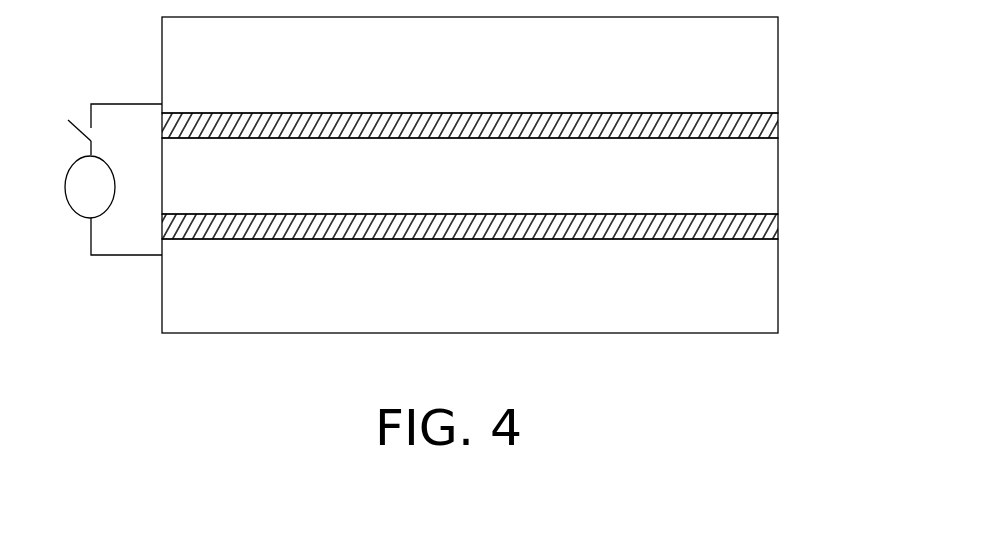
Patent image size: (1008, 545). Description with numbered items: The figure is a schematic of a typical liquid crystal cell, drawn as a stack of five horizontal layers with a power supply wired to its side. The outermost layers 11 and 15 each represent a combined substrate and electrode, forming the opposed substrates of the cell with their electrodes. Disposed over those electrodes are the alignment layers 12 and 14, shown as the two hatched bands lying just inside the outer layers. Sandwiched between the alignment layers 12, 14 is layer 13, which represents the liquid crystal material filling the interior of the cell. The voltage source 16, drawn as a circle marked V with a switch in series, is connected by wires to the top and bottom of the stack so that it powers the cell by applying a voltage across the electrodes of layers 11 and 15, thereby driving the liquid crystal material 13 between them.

The combined substrate and electrode layer 11 is at (758, 287).
The alignment layer 12 is at (758, 225).
The liquid crystal material 13 is at (758, 170).
The alignment layer 14 is at (758, 119).
The combined substrate and electrode layer 15 is at (758, 57).
The voltage source 16 is at (106, 219).